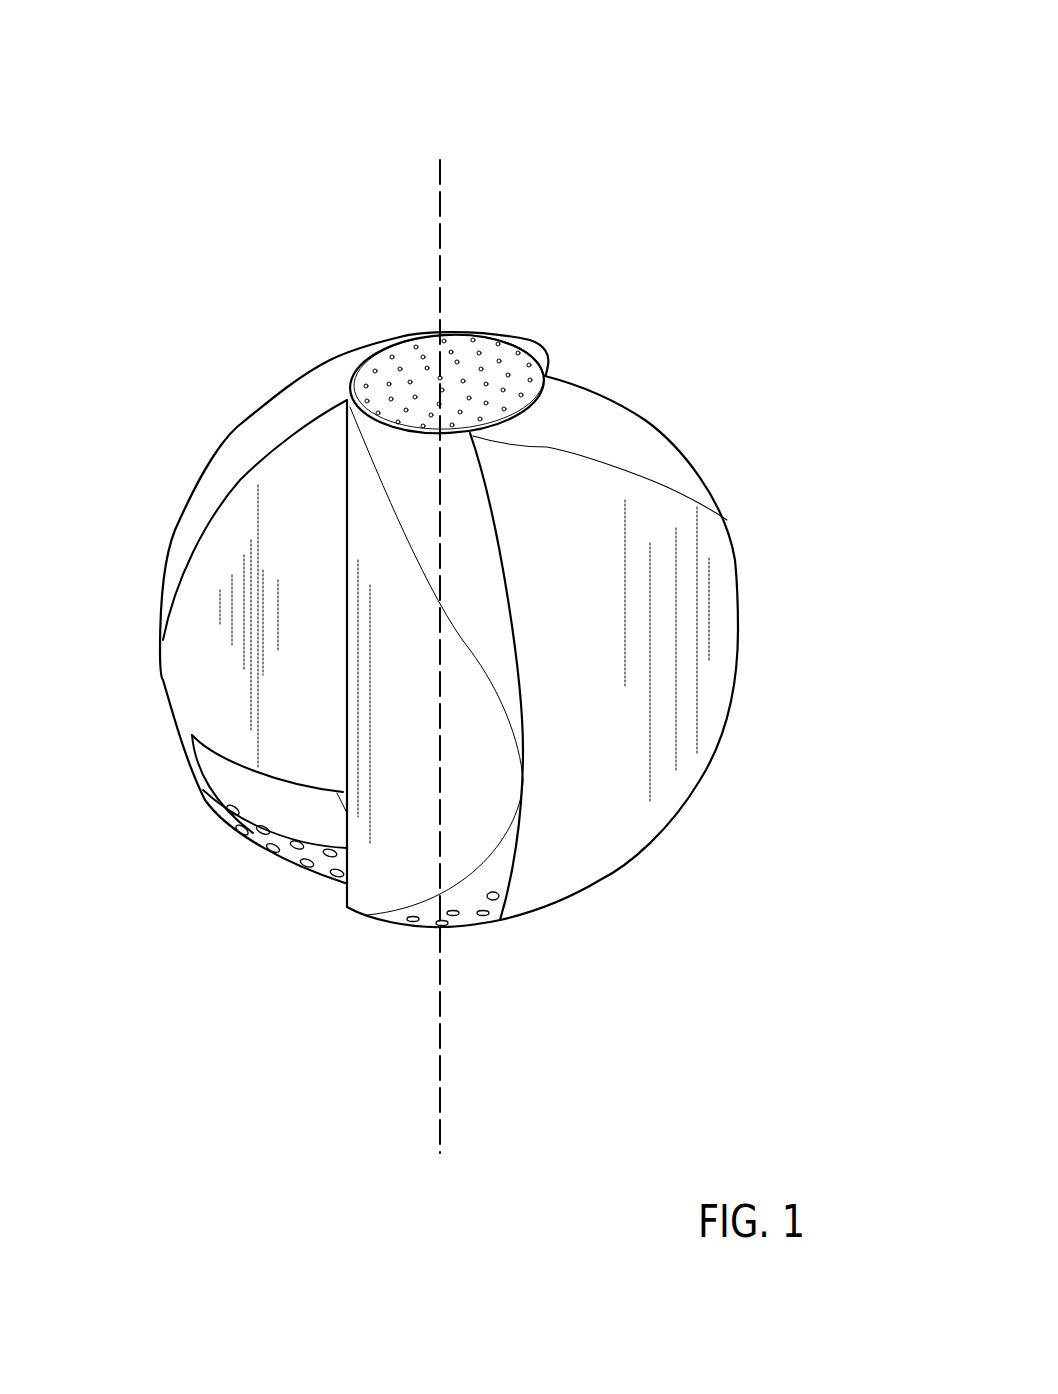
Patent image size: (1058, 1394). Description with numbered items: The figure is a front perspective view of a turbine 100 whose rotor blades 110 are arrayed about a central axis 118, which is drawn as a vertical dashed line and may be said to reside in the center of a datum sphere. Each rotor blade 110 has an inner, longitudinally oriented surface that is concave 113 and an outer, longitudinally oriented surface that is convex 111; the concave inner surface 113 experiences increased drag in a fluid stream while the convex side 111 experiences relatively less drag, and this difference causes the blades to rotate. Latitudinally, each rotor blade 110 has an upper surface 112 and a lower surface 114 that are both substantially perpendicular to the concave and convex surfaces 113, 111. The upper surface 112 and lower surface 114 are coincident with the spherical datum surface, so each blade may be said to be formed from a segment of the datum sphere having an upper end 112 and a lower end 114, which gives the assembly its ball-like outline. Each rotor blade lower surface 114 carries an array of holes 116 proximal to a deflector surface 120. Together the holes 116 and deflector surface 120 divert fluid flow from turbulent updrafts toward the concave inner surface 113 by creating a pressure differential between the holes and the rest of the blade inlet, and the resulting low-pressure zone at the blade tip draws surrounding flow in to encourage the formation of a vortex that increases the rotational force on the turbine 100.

The turbine 100 is at (113, 54).
The rotor blade 110 is at (792, 498).
The convex outer surface 111 is at (388, 847).
The upper surface 112 is at (263, 433).
The concave inner surface 113 is at (203, 630).
The lower surface 114 is at (205, 777).
The holes 116 is at (262, 838).
The central axis 118 is at (440, 1148).
The deflector surface 120 is at (273, 807).